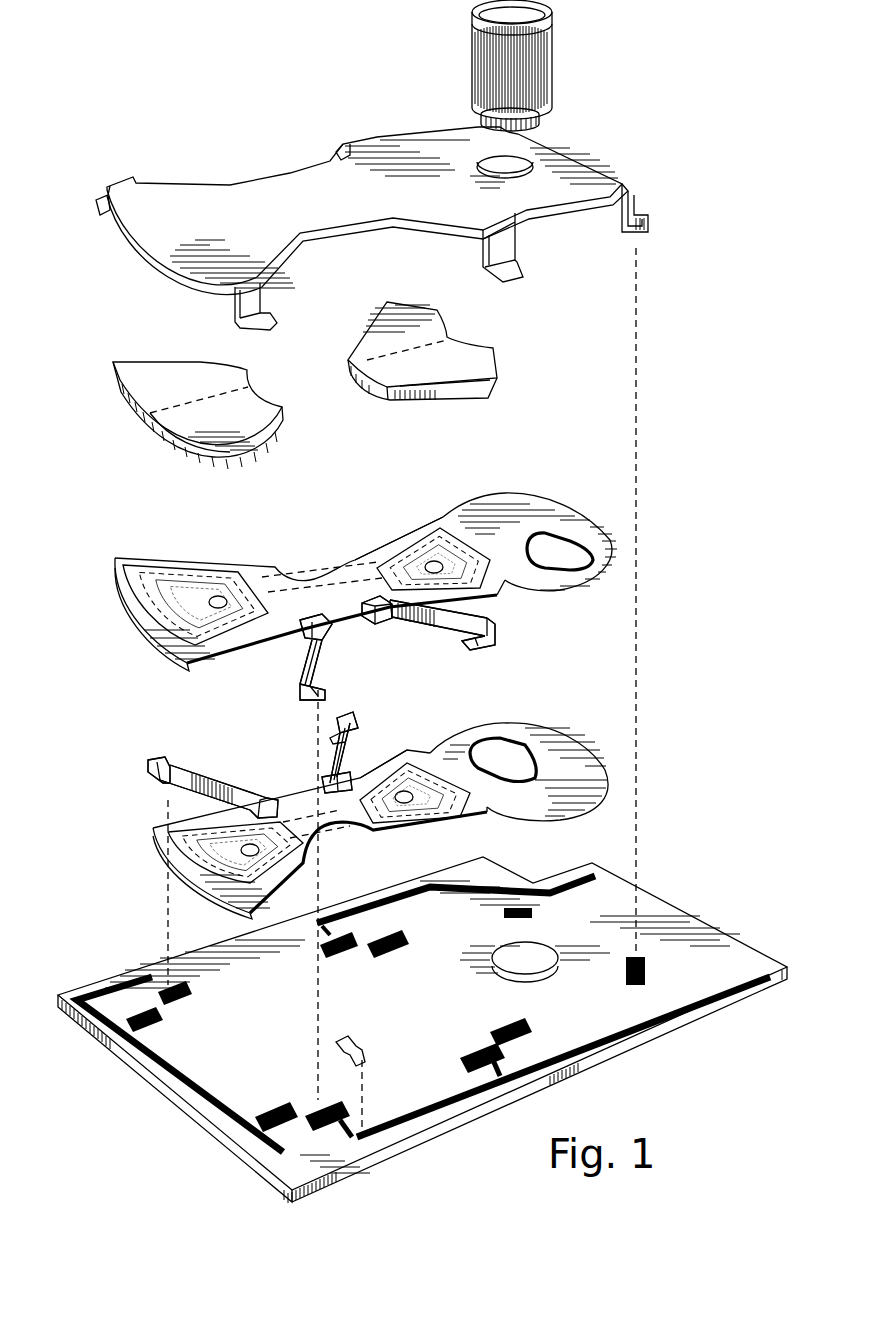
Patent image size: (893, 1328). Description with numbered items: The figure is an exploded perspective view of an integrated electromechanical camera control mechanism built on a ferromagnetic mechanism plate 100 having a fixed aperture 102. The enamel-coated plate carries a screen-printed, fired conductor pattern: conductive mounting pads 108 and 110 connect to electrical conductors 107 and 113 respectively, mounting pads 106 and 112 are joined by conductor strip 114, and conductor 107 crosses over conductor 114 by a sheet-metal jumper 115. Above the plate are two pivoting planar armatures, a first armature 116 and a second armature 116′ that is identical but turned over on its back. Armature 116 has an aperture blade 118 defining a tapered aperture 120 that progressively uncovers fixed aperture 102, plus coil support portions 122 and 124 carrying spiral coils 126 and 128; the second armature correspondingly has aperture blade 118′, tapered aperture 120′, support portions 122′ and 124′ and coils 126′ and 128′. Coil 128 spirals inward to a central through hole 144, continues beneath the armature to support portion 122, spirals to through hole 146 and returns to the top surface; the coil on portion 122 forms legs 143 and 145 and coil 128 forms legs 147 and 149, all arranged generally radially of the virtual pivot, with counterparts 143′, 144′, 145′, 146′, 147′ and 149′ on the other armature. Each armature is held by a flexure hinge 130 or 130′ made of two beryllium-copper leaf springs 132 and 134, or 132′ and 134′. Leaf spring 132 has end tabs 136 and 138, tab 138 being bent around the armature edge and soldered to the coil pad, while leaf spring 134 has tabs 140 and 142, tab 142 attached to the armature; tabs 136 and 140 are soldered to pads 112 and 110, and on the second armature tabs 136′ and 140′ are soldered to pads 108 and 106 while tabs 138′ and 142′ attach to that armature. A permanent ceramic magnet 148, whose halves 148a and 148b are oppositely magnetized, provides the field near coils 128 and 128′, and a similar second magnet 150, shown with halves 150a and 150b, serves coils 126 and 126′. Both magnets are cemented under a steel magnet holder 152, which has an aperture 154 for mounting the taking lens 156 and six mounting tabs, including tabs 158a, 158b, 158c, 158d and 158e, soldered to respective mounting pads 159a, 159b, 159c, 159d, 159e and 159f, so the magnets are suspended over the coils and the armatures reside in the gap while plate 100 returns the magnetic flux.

The mechanism plate 100 is at (673, 915).
The aperture 102 is at (532, 972).
The mounting pad 106 is at (465, 1050).
The electrical conductor 107 is at (623, 1040).
The conductive mounting pad 108 is at (318, 1103).
The conductive mounting pad 110 is at (343, 955).
The mounting pad 112 is at (188, 990).
The electrical conductor 113 is at (488, 890).
The conductor strip 114 is at (165, 1092).
The jumper 115 is at (350, 1040).
The first armature 116 is at (344, 840).
The second armature 116′ is at (314, 559).
The aperture blade 118 is at (578, 765).
The aperture blade 118′ is at (568, 505).
The tapered aperture 120 is at (500, 738).
The tapered aperture 120′ is at (575, 572).
The coil support portion 122 is at (400, 760).
The coil support portion 122′ is at (440, 518).
The coil support portion 124 is at (156, 830).
The coil support portion 124′ is at (118, 560).
The spiral coil 126 is at (470, 805).
The spiral coil 126′ is at (460, 555).
The spiral coil 128 is at (200, 895).
The spiral coil 128′ is at (135, 620).
The flexure hinge 130 is at (316, 762).
The flexure hinge 130′ is at (423, 641).
The leaf spring 132 is at (160, 778).
The leaf spring 132′ is at (303, 668).
The leaf spring 134 is at (360, 716).
The leaf spring 134′ is at (442, 630).
The tab 136 is at (166, 760).
The tab 136′ is at (322, 690).
The tab 138 is at (272, 795).
The tab 138′ is at (338, 640).
The tab 140 is at (336, 735).
The tab 140′ is at (484, 647).
The tab 142 is at (333, 782).
The tab 142′ is at (368, 610).
The coil leg 143 is at (398, 790).
The coil leg 143′ is at (470, 590).
The through hole 144 is at (240, 851).
The through hole 144′ is at (209, 603).
The coil leg 145 is at (428, 820).
The coil leg 145′ is at (410, 540).
The through hole 146 is at (455, 785).
The through hole 146′ is at (444, 567).
The coil leg 147 is at (233, 840).
The coil leg 147′ is at (212, 630).
The permanent ceramic magnet 148 is at (122, 424).
The magnet half 148a is at (140, 366).
The magnet half 148b is at (172, 436).
The coil leg 149 is at (262, 868).
The coil leg 149′ is at (175, 580).
The permanent ceramic magnet 150 is at (468, 331).
The magnet surface 150a is at (480, 377).
The magnet surface 150b is at (412, 312).
The magnet holder 152 is at (182, 190).
The aperture 154 is at (496, 176).
The taking lens 156 is at (488, 62).
The mounting tab 158a is at (98, 200).
The mounting tab 158b is at (238, 326).
The mounting tab 158c is at (338, 153).
The mounting tab 158d is at (516, 270).
The mounting tab 158e is at (648, 230).
The mounting pad 159a is at (148, 1026).
The mounting pad 159b is at (262, 1110).
The mounting pad 159c is at (388, 948).
The mounting pad 159d is at (492, 1022).
The mounting pad 159e is at (646, 970).
The mounting pad 159f is at (504, 913).